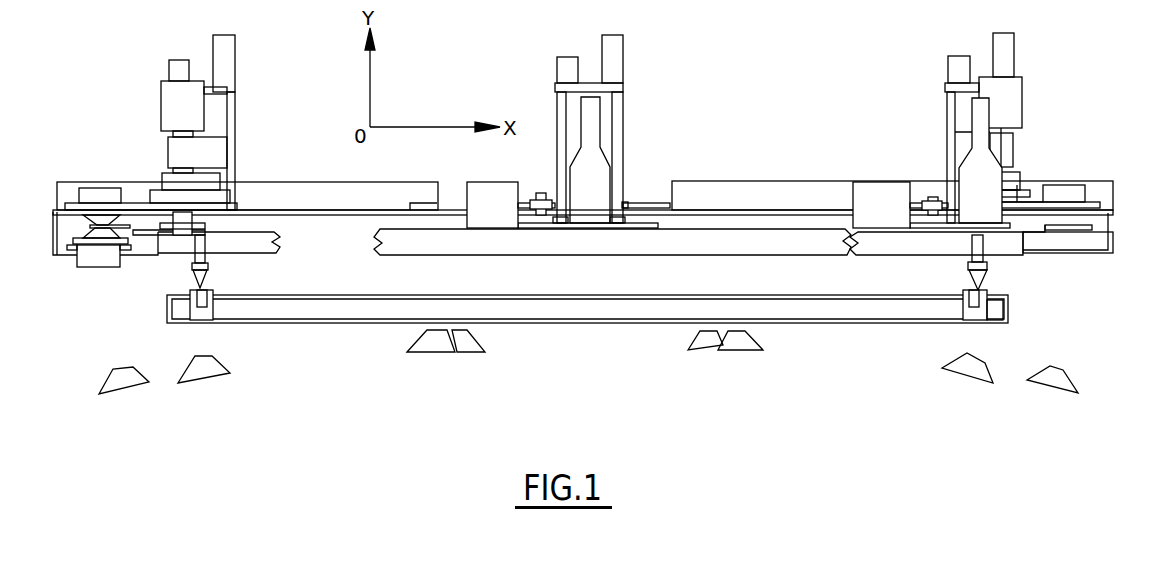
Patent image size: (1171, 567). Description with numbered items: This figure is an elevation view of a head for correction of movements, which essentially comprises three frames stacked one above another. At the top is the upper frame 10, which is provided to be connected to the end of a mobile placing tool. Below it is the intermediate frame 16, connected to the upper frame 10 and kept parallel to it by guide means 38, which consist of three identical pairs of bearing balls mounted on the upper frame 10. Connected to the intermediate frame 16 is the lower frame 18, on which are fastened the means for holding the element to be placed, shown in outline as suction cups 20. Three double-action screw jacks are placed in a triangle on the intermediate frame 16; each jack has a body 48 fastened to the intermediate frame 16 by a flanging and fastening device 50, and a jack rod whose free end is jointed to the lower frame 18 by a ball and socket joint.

The upper frame 10 is at (1113, 232).
The intermediate frame 16 is at (262, 242).
The lower frame 18 is at (1008, 318).
The suction cups 20 is at (752, 331).
The guide means 38 is at (105, 186).
The body 48 is at (597, 187).
The flanging and fastening device 50 is at (623, 142).